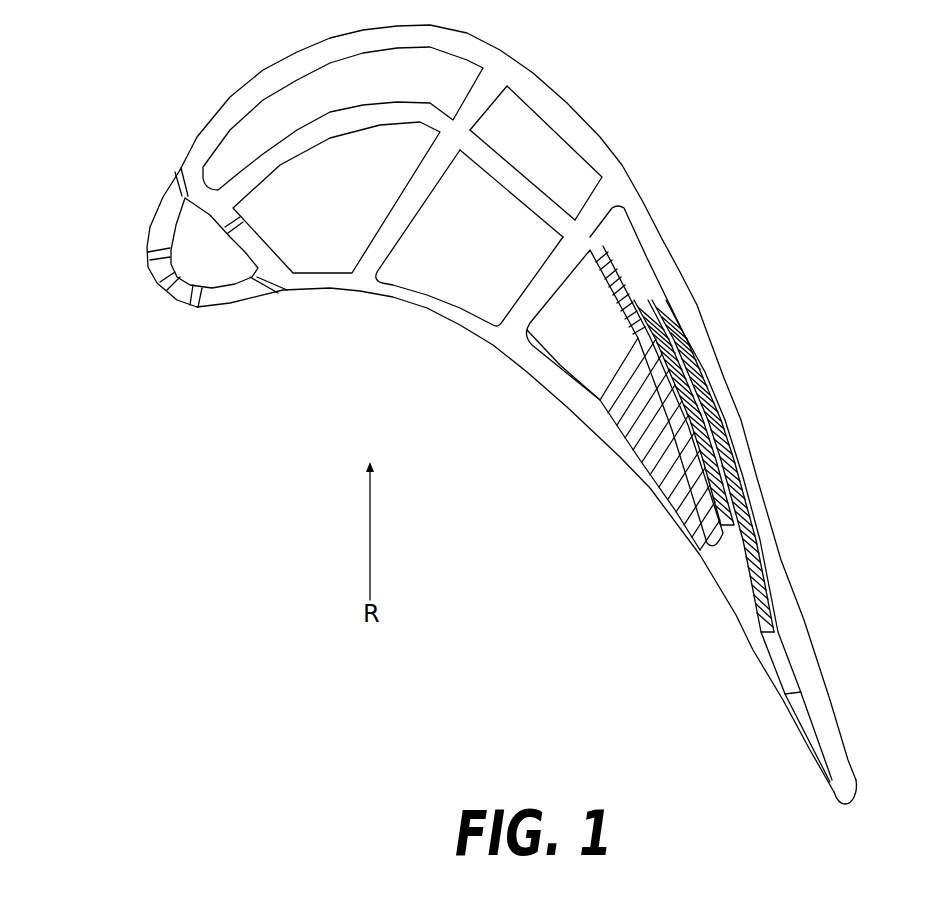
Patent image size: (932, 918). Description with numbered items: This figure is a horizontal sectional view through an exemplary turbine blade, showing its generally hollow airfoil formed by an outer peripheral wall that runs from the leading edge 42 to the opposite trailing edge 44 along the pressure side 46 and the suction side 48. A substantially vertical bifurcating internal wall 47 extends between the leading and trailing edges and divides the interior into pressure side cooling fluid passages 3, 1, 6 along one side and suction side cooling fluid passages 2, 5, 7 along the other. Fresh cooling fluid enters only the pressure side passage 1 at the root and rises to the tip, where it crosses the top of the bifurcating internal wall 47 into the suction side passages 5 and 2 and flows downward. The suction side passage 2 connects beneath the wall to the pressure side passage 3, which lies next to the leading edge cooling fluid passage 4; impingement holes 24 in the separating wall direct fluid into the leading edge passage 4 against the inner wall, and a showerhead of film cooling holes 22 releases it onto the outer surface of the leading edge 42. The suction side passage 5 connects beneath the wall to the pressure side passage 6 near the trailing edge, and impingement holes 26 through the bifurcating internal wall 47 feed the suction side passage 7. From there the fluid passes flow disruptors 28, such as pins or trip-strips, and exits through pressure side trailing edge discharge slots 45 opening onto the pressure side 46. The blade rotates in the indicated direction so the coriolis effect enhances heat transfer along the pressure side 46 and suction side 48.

The pressure side cooling fluid passage 1 is at (455, 237).
The suction side cooling fluid passage 2 is at (357, 92).
The pressure side cooling fluid passage 3 is at (345, 177).
The leading edge cooling fluid passage 4 is at (207, 259).
The suction side cooling fluid passage 5 is at (520, 130).
The pressure side cooling fluid passage 6 is at (594, 350).
The suction side cooling fluid passage 7 is at (635, 270).
The film cooling holes 22 is at (193, 305).
The impingement holes 24 is at (222, 237).
The impingement holes 26 is at (627, 296).
The flow disruptors 28 is at (657, 457).
The leading edge 42 is at (149, 304).
The trailing edge 44 is at (811, 779).
The pressure side trailing edge discharge slots 45 is at (787, 660).
The pressure side 46 is at (530, 374).
The bifurcating internal wall 47 is at (540, 193).
The suction side 48 is at (643, 207).